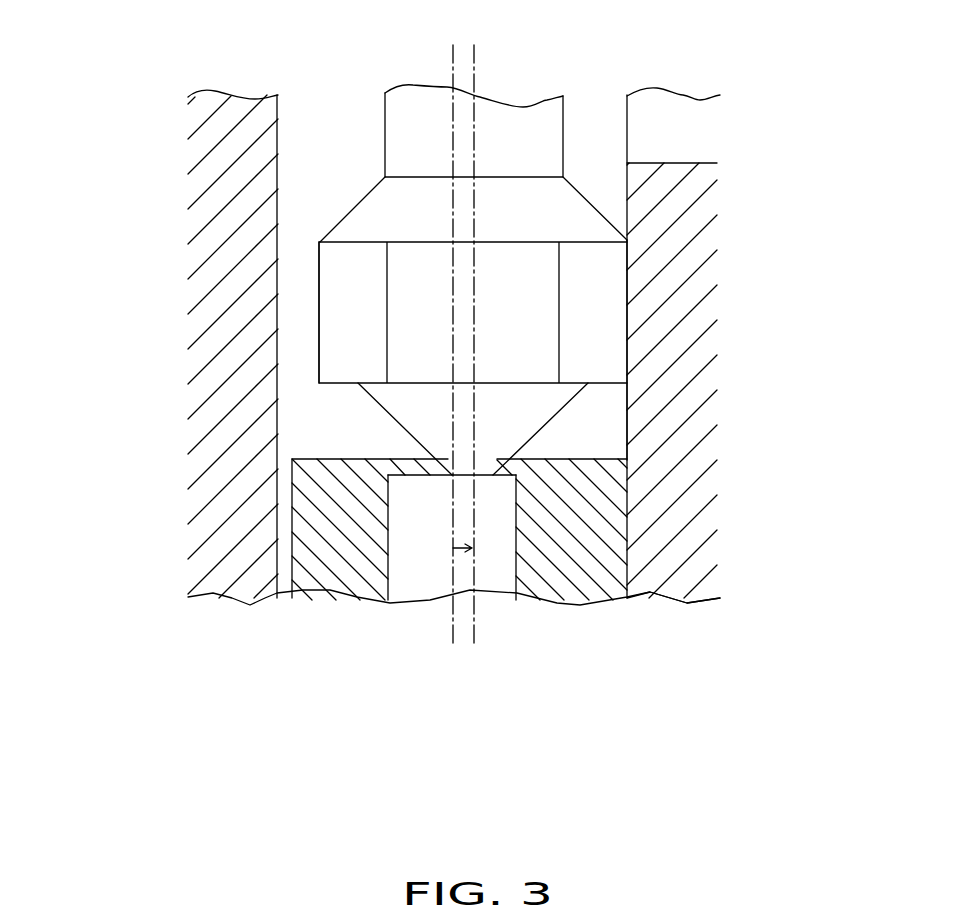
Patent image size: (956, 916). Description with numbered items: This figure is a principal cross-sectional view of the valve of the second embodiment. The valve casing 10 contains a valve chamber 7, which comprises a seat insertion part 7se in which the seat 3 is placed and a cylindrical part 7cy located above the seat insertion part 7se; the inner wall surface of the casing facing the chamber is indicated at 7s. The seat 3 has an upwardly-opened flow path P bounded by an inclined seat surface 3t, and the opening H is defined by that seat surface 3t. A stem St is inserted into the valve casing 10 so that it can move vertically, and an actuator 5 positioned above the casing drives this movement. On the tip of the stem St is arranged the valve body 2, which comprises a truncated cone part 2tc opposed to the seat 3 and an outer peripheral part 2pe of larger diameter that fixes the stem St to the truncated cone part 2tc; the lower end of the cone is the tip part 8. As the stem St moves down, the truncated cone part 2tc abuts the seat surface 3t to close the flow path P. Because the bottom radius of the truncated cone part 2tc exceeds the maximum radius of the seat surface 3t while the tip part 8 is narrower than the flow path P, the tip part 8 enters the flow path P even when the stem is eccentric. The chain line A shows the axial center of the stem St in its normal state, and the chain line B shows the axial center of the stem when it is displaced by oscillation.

The valve body 2 is at (90, 375).
The outer peripheral part 2pe is at (352, 333).
The truncated cone part 2tc is at (427, 417).
The seat 3 is at (323, 513).
The seat surface 3t is at (376, 467).
The actuator 5 is at (385, 202).
The valve chamber 7 is at (812, 162).
The cylindrical part 7cy is at (627, 207).
The inner side surface of housing 7s is at (277, 566).
The seat insertion part 7se is at (627, 527).
The tip part 8 is at (483, 478).
The valve casing 10 is at (668, 532).
The axial center of the stem in normal state A is at (450, 246).
The axial center of the eccentric stem B is at (473, 288).
The opening H is at (435, 497).
The flow path P is at (505, 575).
The stem St is at (523, 128).